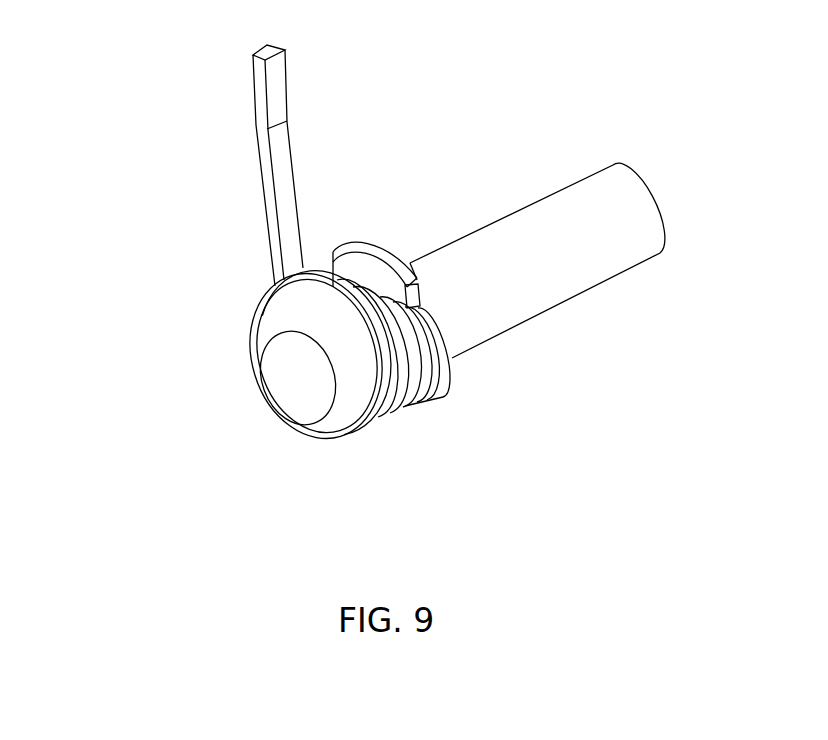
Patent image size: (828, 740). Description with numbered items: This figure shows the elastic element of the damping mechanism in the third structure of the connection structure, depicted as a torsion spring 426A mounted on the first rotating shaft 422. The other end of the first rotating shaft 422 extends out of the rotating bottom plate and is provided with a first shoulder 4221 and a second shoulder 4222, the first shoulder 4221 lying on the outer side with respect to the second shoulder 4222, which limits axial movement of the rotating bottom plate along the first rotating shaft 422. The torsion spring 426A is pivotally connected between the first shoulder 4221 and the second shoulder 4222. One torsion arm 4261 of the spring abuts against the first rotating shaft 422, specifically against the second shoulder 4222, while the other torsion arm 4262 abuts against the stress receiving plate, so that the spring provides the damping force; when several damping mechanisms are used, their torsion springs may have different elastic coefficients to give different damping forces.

The first rotating shaft 422 is at (302, 378).
The first shoulder 4221 is at (355, 393).
The second shoulder 4222 is at (447, 358).
The collar 426A is at (333, 287).
The torsion arm 4261 is at (283, 203).
The torsion arm 4262 is at (403, 297).